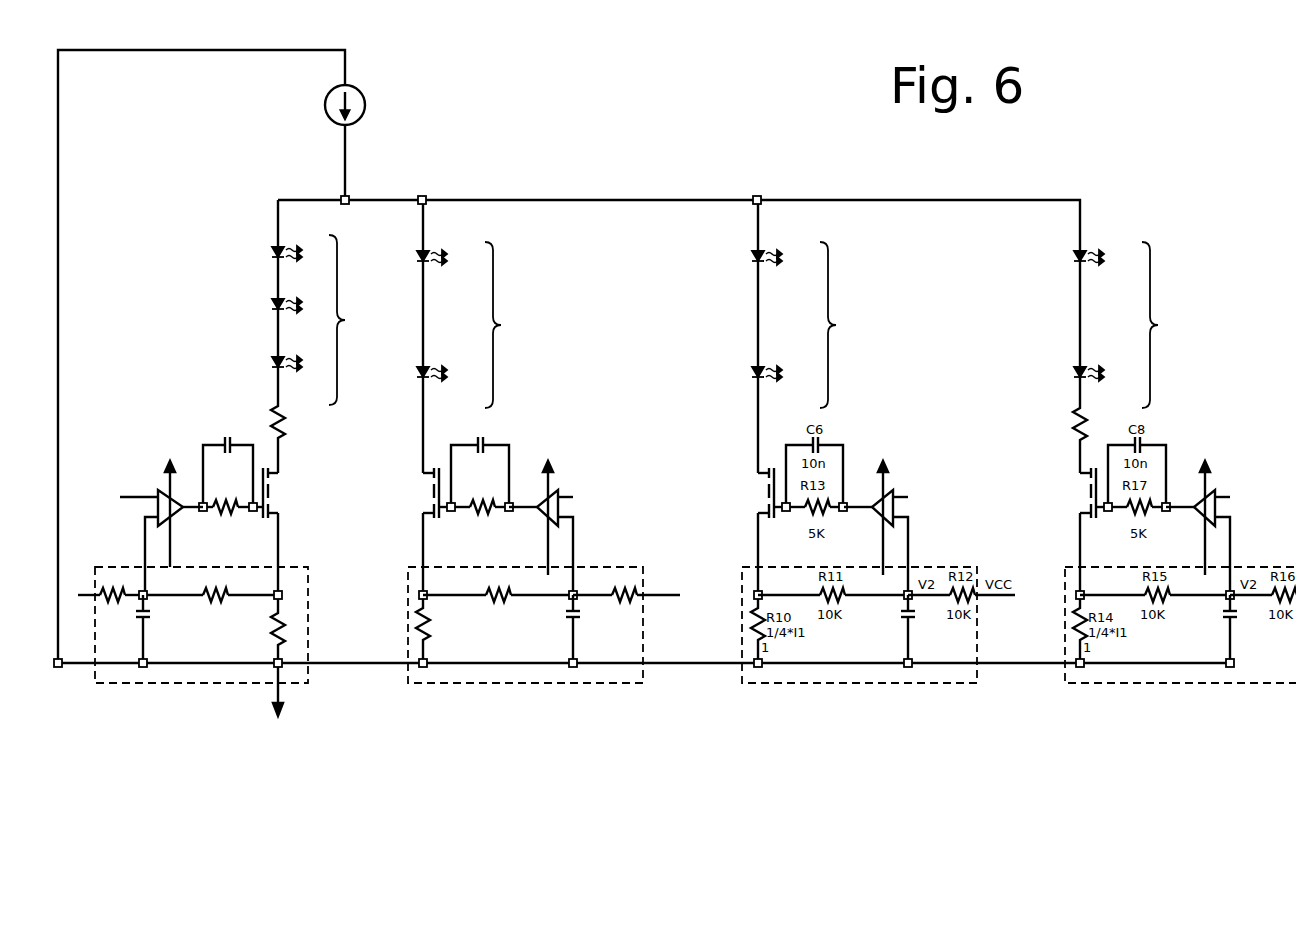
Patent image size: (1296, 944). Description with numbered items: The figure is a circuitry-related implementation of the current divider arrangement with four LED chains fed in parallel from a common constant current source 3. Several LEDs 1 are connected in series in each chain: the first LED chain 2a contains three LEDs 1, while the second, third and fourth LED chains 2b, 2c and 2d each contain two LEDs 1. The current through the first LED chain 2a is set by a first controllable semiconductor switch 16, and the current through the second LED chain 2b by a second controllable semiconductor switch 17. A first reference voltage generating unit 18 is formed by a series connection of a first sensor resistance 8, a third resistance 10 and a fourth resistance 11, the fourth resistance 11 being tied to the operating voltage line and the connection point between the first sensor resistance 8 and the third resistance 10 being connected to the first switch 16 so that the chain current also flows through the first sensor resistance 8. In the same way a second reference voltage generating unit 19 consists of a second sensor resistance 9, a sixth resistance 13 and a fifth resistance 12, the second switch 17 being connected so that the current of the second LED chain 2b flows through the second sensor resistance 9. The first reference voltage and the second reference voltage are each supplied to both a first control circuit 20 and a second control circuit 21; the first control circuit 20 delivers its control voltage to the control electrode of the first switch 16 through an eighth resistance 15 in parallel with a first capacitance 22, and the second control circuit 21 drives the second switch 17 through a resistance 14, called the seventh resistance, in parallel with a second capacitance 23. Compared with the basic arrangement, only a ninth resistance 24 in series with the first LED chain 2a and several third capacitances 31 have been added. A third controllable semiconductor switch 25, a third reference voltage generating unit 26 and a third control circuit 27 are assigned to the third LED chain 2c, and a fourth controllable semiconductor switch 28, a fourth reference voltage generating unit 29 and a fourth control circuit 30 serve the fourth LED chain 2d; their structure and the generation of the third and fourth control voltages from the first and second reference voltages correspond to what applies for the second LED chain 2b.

The LED 1 is at (272, 253).
The first LED chain 2a is at (351, 320).
The second LED chain 2b is at (507, 325).
The third LED chain 2c is at (841, 325).
The fourth LED chain 2d is at (1164, 325).
The common constant current source 3 is at (367, 100).
The first sensor resistance 8 is at (268, 635).
The second sensor resistance 9 is at (418, 633).
The third resistance 10 is at (225, 597).
The fourth resistance 11 is at (105, 598).
The fifth resistance 12 is at (640, 602).
The sixth resistance 13 is at (510, 600).
The gate resistor R9 14 is at (474, 512).
The eighth resistance 15 is at (243, 512).
The first controllable semiconductor switch 16 is at (270, 472).
The second controllable semiconductor switch 17 is at (432, 472).
The first reference voltage generating unit 18 is at (187, 685).
The second reference voltage generating unit 19 is at (523, 685).
The first control circuit 20 is at (162, 490).
The second control circuit 21 is at (562, 507).
The first capacitance 22 is at (225, 440).
The second capacitance 23 is at (500, 440).
The ninth resistance 24 is at (271, 419).
The third controllable semiconductor switch 25 is at (765, 474).
The third reference voltage generating unit 26 is at (862, 685).
The third control circuit 27 is at (895, 507).
The fourth controllable semiconductor switch 28 is at (1085, 478).
The fourth reference voltage generating unit 29 is at (1165, 685).
The fourth control circuit 30 is at (1220, 507).
The third capacitance 31 is at (150, 620).